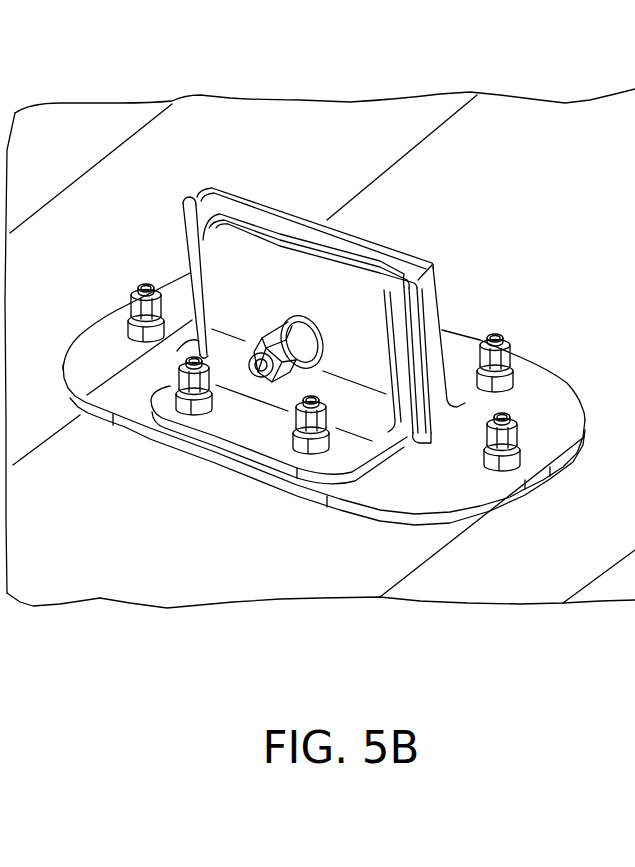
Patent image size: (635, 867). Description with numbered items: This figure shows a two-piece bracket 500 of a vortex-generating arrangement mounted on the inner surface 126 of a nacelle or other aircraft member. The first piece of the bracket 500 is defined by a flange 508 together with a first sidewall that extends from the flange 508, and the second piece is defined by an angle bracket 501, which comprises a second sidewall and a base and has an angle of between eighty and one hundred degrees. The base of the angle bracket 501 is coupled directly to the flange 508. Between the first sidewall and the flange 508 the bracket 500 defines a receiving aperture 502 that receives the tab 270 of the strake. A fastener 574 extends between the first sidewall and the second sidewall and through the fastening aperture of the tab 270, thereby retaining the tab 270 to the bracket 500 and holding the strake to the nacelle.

The bracket 500 is at (236, 120).
The angle bracket 501 is at (233, 247).
The tab 270 is at (293, 235).
The fastener 574 is at (257, 347).
The receiving aperture 502 is at (408, 436).
The flange 508 is at (335, 503).
The inner surface 126 is at (191, 574).